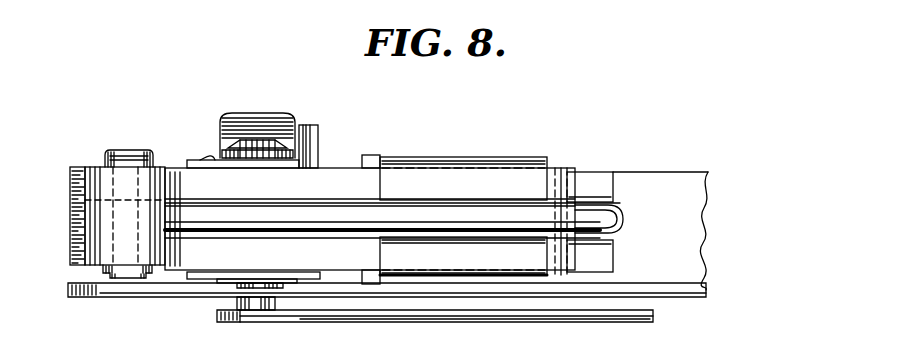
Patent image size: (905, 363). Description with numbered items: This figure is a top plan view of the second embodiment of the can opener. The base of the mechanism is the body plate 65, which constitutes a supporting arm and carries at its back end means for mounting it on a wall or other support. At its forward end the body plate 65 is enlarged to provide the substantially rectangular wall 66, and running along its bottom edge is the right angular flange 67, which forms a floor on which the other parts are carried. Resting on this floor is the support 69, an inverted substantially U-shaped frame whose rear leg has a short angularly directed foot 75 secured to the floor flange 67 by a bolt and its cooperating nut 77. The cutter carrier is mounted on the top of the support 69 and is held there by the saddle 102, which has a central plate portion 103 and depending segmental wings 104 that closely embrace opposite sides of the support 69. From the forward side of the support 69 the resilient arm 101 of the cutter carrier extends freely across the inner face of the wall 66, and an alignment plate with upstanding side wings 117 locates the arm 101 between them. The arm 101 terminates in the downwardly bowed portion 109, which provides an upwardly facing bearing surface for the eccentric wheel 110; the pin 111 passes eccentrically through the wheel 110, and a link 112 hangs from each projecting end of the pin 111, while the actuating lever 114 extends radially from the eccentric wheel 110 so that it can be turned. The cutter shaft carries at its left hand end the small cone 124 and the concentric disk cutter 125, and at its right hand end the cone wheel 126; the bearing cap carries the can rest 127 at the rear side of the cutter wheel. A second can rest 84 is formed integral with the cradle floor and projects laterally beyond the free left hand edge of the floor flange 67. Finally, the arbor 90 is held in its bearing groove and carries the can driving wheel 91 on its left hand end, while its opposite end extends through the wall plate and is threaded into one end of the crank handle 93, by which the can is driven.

The downwardly bowed portion 109 is at (68, 168).
The eccentric wheel 110 is at (100, 172).
The pin 111 is at (118, 152).
The link 112 is at (150, 152).
The upstanding side wings 117 is at (200, 162).
The can driving wheel 91 is at (213, 158).
The disk cutter 125 is at (242, 140).
The small cone 124 is at (257, 153).
The can rest 84 is at (280, 123).
The can rest 127 is at (320, 132).
The resilient arm 101 is at (317, 185).
The depending segmental wings 104 is at (371, 160).
The saddle 102 is at (491, 178).
The central plate portion 103 is at (520, 182).
The angularly directed foot 75 is at (595, 182).
The actuating lever 114 is at (593, 210).
The nut 77 is at (615, 204).
The right angular flange 67 is at (688, 242).
The support 69 is at (609, 266).
The rectangular wall 66 is at (133, 294).
The body plate 65 is at (675, 300).
The crank handle 93 is at (405, 320).
The arbor 90 is at (280, 318).
The cone wheel 126 is at (225, 290).